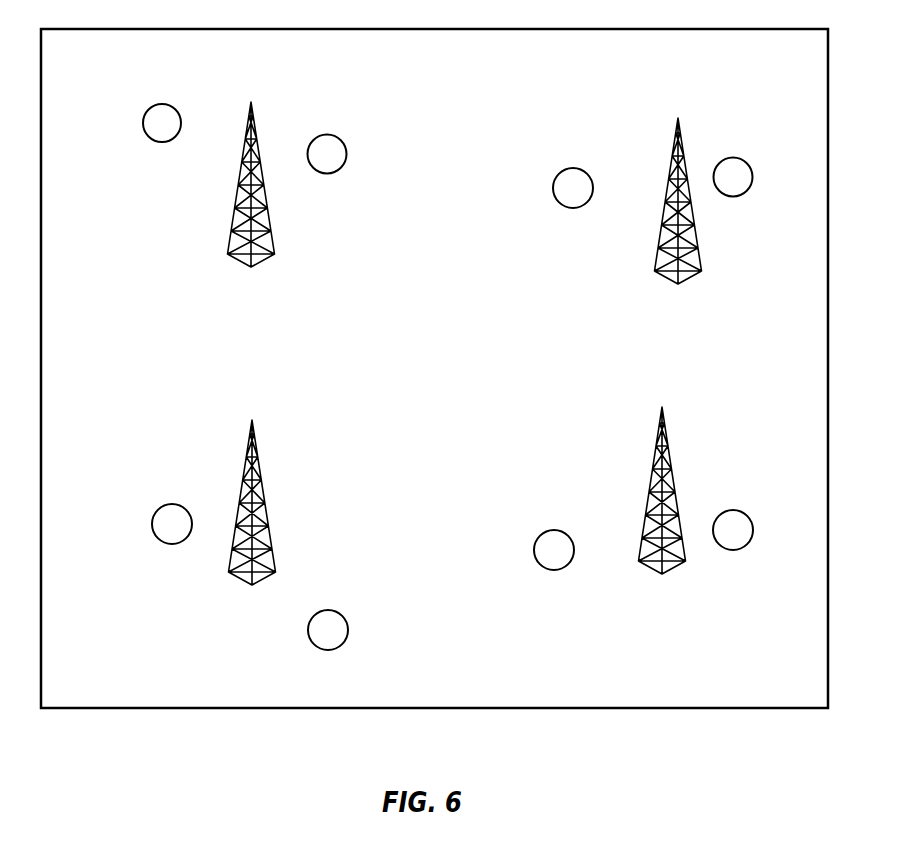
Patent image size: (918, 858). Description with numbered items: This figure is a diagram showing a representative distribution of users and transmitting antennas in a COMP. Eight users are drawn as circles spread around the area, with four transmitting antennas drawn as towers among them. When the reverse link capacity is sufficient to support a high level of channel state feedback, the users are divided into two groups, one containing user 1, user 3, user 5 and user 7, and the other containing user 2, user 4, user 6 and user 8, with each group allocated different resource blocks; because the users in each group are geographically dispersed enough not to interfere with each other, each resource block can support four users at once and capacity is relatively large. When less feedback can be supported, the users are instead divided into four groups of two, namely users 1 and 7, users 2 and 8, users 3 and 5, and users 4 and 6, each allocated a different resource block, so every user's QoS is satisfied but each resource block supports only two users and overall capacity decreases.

The user 1 is at (169, 109).
The user 2 is at (334, 141).
The user 3 is at (579, 175).
The user 4 is at (740, 163).
The user 5 is at (177, 511).
The user 6 is at (334, 617).
The user 7 is at (560, 536).
The user 8 is at (739, 517).